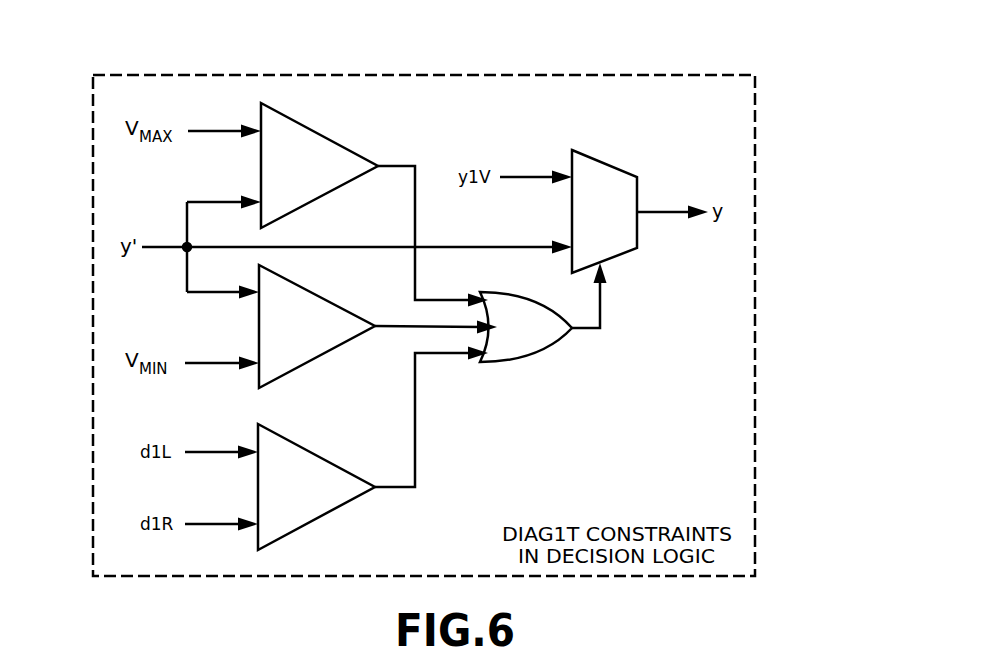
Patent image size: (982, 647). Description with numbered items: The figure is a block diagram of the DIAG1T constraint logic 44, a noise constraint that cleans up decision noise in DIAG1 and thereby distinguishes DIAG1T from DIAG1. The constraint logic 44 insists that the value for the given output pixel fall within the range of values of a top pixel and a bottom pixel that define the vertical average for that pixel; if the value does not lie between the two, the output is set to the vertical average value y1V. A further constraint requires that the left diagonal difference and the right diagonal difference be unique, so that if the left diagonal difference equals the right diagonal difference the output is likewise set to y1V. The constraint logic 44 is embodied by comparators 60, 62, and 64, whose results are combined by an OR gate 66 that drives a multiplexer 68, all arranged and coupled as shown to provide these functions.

The DIAG1T constraint logic 44 is at (688, 67).
The comparator 60 is at (330, 138).
The comparator 62 is at (330, 297).
The comparator 64 is at (313, 448).
The OR gate 66 is at (538, 355).
The multiplexer 68 is at (605, 157).